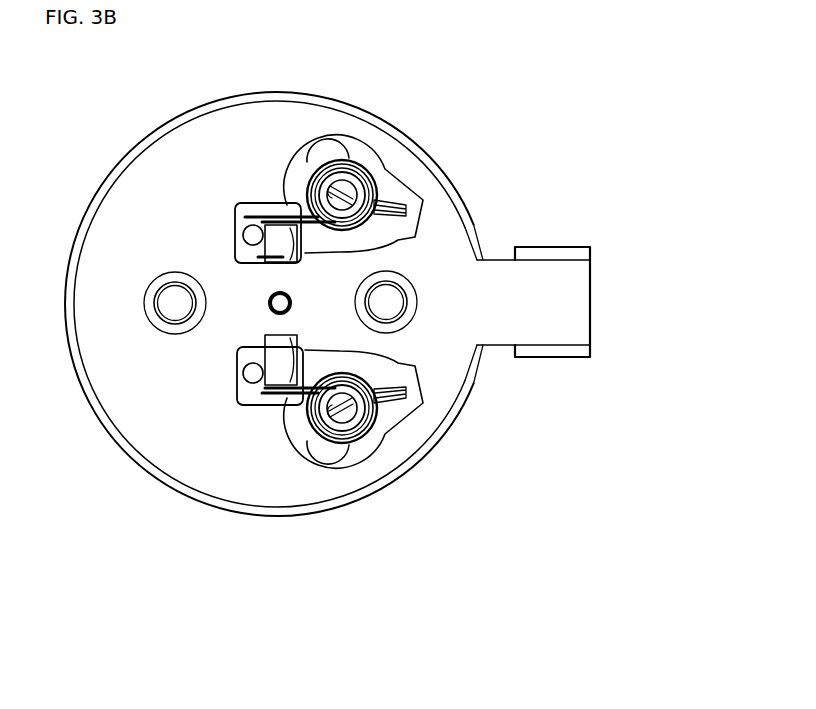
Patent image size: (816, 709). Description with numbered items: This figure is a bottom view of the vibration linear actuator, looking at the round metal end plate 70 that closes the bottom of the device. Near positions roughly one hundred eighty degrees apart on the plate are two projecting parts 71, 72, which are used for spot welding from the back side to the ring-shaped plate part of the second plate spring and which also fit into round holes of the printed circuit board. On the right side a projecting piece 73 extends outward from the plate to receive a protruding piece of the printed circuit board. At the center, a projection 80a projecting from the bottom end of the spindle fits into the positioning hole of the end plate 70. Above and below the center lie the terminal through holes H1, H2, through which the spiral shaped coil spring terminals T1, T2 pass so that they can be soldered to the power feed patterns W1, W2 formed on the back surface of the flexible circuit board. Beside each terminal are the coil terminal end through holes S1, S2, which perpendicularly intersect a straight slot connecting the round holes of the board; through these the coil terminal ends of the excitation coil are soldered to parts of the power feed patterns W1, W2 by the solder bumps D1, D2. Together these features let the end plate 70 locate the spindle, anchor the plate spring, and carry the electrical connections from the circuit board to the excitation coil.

The metal end plate 70 is at (371, 509).
The projecting part 71 is at (158, 300).
The projecting part 72 is at (405, 300).
The projecting piece 73 is at (576, 312).
The projection 80a is at (275, 304).
The coil spring terminal T1 is at (370, 162).
The coil spring terminal T2 is at (365, 447).
The terminal through hole H1 is at (336, 147).
The terminal through hole H2 is at (320, 460).
The power feed pattern W1 is at (378, 230).
The power feed pattern W2 is at (376, 368).
The coil terminal end through hole S1 is at (296, 258).
The coil terminal end through hole S2 is at (305, 352).
The solder bump D1 is at (243, 233).
The solder bump D2 is at (243, 376).